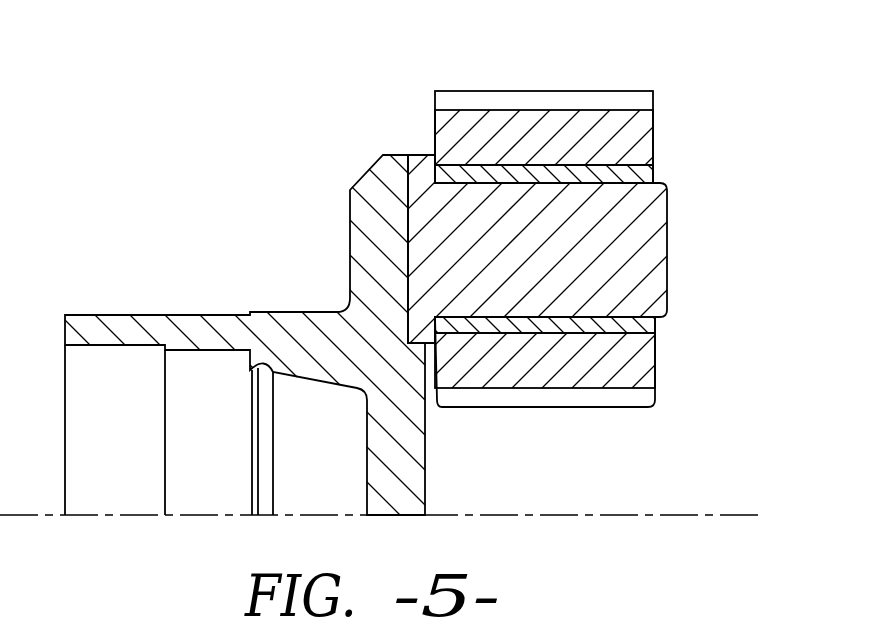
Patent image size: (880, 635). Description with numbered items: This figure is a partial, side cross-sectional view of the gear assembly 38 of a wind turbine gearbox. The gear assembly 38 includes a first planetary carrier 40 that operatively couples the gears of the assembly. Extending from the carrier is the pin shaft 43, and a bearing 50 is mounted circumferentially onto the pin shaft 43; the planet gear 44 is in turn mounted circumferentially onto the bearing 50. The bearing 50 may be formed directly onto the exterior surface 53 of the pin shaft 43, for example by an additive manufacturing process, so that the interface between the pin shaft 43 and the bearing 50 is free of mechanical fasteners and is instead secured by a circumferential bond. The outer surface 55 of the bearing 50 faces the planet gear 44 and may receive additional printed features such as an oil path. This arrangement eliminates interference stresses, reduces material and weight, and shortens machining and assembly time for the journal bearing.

The gear assembly 38 is at (436, 274).
The first planetary carrier 40 is at (346, 222).
The pin shaft 43 is at (596, 208).
The planet gear 44 is at (487, 84).
The bearing 50 is at (523, 162).
The exterior surface 53 is at (533, 318).
The outer surface 55 is at (611, 320).